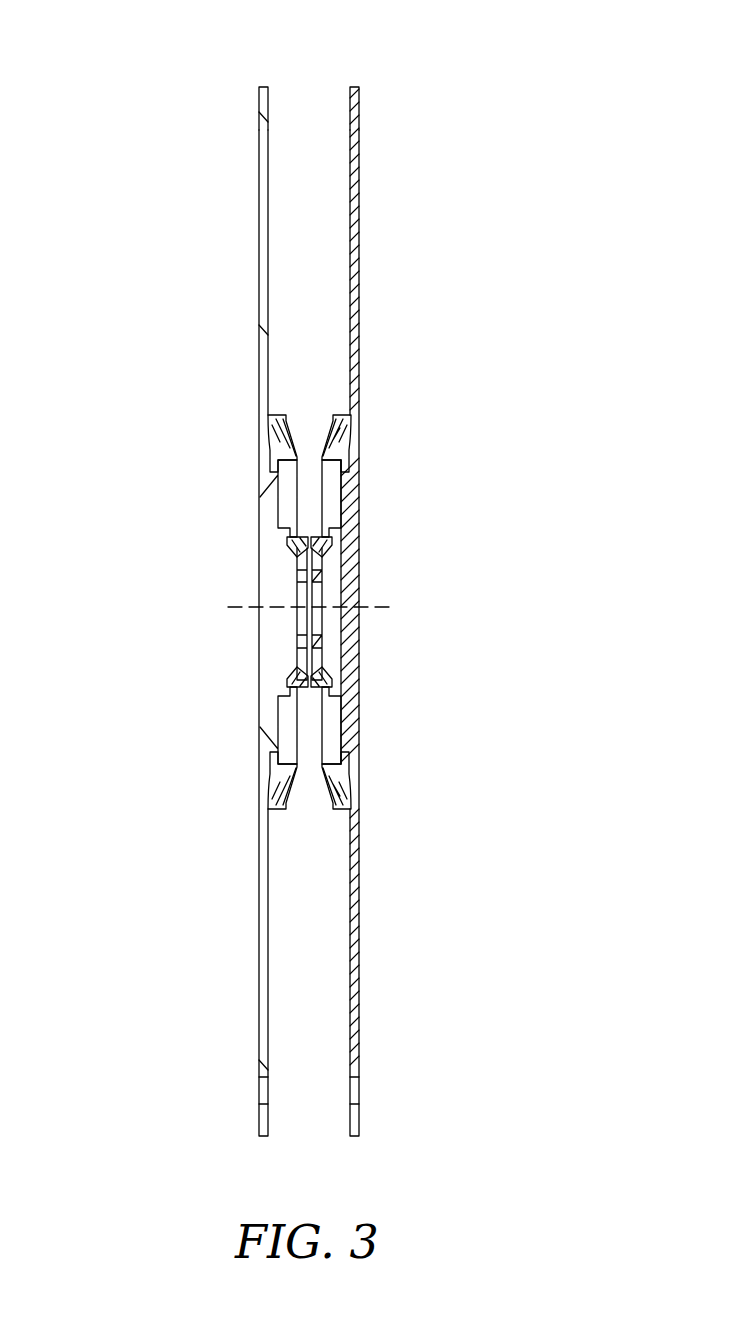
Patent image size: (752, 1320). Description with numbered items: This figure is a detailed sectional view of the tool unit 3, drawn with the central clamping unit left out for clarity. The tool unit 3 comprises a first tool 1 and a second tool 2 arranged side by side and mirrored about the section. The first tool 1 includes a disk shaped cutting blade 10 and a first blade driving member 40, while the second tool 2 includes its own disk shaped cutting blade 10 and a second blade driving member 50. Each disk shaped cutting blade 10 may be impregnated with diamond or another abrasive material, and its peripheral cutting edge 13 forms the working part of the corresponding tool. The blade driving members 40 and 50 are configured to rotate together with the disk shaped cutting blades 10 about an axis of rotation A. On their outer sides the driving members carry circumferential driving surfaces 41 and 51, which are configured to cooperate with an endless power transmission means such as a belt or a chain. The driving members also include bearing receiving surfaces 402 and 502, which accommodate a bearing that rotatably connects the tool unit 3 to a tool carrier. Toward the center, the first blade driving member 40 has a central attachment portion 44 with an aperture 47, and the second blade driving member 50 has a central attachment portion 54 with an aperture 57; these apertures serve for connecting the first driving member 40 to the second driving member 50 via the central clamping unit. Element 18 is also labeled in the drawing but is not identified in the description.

The tool unit 3 is at (307, 75).
The peripheral cutting edge 13 is at (262, 86).
The disk shaped cutting blade 10 is at (263, 256).
The first tool 1 is at (185, 597).
The second tool 2 is at (440, 588).
The first blade driving member 40 is at (196, 501).
The circumferential driving surface 41 is at (280, 420).
The bearing receiving surface 402 is at (286, 538).
The aperture 47 is at (306, 617).
The central attachment portion 44 is at (266, 663).
The second blade driving member 50 is at (418, 491).
The circumferential driving surface 51 is at (340, 420).
The seal 18 is at (358, 446).
The bearing receiving surface 502 is at (333, 536).
The aperture 57 is at (313, 615).
The central attachment portion 54 is at (355, 663).
The axis of rotation A is at (390, 607).